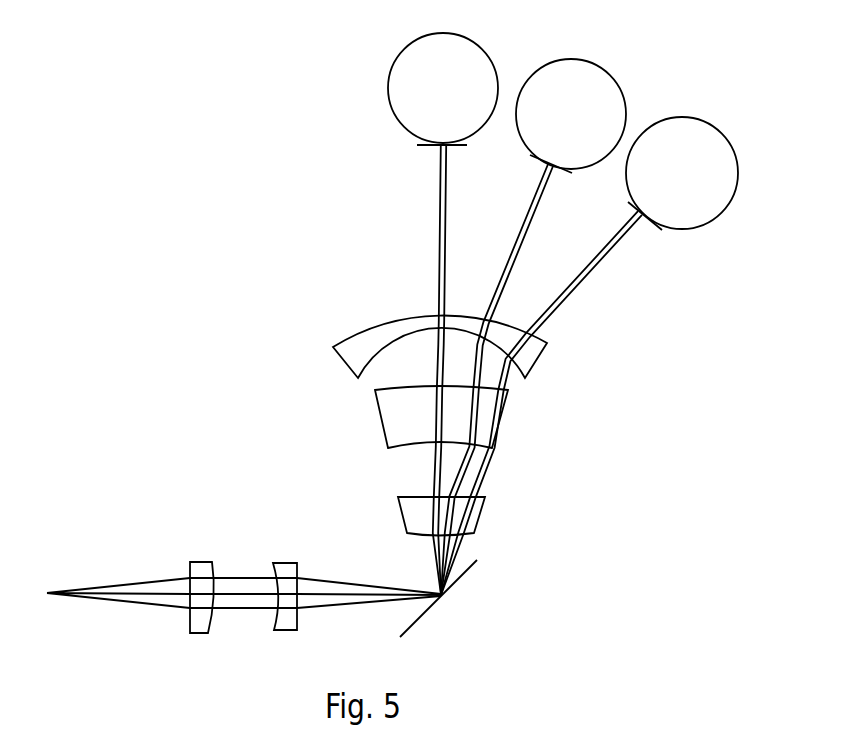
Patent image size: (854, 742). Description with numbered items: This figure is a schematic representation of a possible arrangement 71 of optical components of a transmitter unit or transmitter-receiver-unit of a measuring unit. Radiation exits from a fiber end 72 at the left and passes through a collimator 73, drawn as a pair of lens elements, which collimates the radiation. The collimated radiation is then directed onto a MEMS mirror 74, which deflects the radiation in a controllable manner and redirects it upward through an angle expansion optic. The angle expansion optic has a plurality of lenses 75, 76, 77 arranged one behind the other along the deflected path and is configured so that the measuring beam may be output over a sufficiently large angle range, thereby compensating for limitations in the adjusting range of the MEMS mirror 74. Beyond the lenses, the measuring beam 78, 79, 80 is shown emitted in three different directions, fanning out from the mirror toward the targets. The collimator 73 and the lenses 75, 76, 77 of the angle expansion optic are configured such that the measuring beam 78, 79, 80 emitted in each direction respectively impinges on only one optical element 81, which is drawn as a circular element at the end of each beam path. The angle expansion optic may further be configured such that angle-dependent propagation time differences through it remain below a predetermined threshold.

The arrangement 71 is at (93, 92).
The fiber end 72 is at (46, 592).
The collimator 73 is at (273, 562).
The MEMS mirror 74 is at (410, 627).
The lens 75 is at (403, 518).
The lens 76 is at (388, 435).
The lens 77 is at (333, 350).
The measuring beam 78 is at (440, 242).
The measuring beam 79 is at (515, 252).
The measuring beam 80 is at (593, 262).
The optical element 81 is at (472, 40).